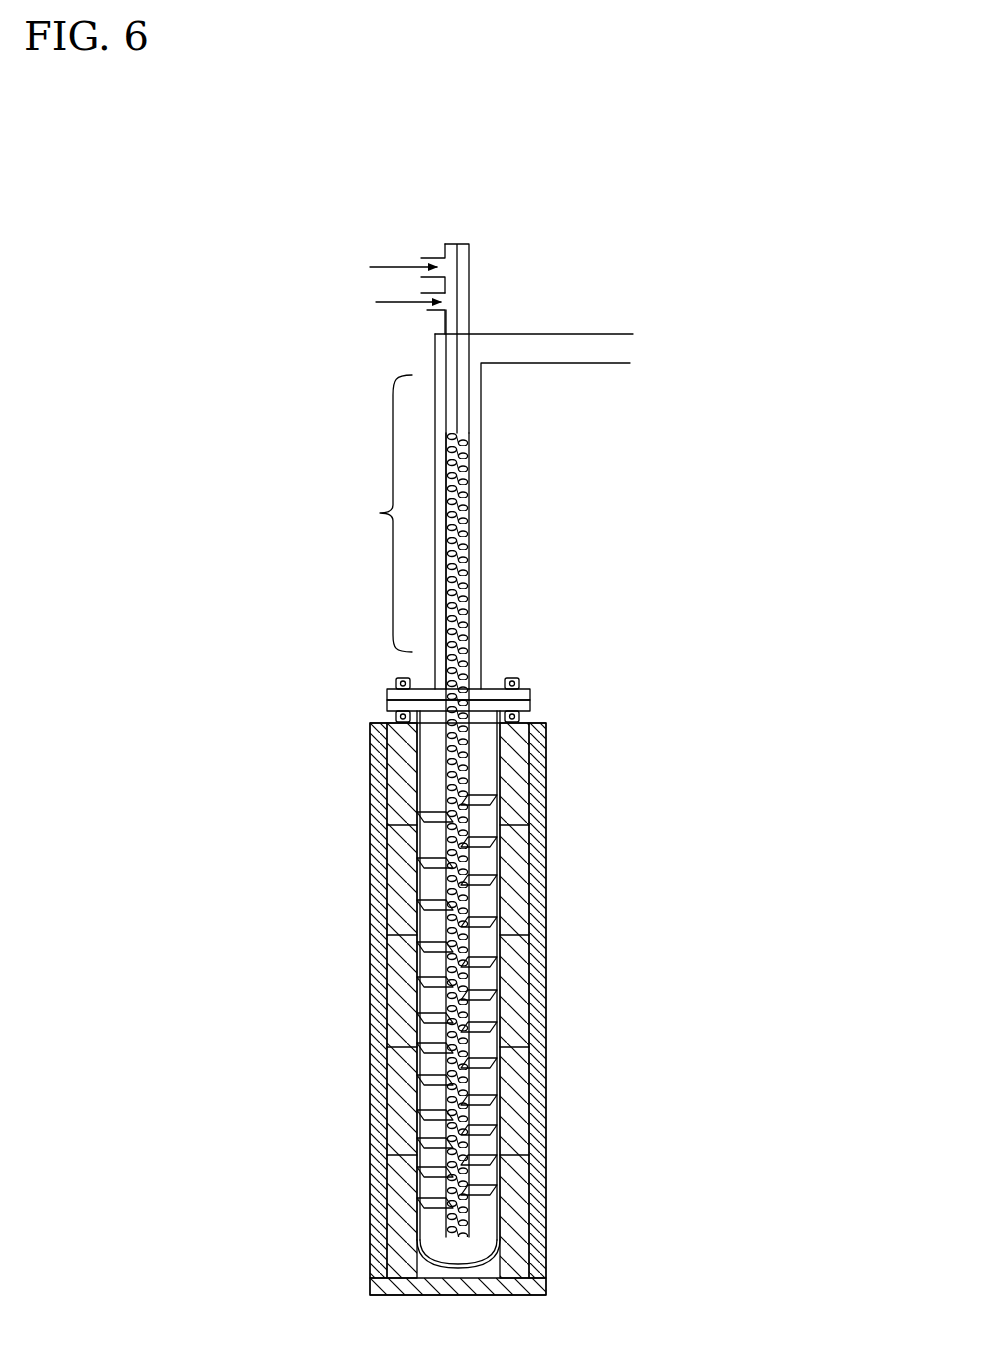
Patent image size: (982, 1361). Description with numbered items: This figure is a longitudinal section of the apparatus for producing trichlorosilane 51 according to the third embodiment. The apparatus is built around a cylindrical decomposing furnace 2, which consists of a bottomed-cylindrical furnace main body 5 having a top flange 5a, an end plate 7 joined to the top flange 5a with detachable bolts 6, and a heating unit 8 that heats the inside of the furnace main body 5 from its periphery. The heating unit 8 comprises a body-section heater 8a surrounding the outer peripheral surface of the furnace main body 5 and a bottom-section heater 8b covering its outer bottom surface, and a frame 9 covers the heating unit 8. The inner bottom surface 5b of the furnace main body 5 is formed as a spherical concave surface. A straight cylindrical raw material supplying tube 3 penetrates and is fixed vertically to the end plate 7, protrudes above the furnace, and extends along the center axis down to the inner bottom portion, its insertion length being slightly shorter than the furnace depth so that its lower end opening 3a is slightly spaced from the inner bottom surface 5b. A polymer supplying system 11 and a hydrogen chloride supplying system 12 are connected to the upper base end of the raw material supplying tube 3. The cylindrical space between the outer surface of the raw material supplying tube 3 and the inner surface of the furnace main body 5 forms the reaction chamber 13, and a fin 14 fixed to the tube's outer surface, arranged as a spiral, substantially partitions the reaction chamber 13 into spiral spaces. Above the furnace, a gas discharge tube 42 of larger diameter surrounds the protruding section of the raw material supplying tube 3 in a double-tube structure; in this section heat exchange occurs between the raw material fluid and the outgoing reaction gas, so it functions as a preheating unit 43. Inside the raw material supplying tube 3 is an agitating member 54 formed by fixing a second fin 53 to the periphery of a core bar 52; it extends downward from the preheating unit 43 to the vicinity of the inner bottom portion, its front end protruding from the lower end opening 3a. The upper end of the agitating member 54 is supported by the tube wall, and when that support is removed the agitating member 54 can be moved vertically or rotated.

The decomposing furnace 2 is at (555, 887).
The raw material supplying tube 3 is at (472, 757).
The lower end opening 3a is at (468, 1223).
The furnace main body 5 is at (500, 1003).
The top flange 5a is at (387, 705).
The inner bottom surface 5b is at (457, 1265).
The bolts 6 is at (509, 681).
The end plate 7 is at (392, 683).
The heating unit 8 is at (382, 1122).
The body-section heater 8a is at (397, 973).
The bottom-section heater 8b is at (425, 1262).
The frame 9 is at (378, 893).
The polymer supplying system 11 is at (392, 303).
The hydrogen chloride supplying system 12 is at (385, 265).
The reaction chamber 13 is at (430, 1025).
The fin 14 is at (478, 1130).
The gas discharge tube 42 is at (563, 333).
The preheating unit 43 is at (371, 513).
The apparatus for producing trichlorosilane 51 is at (593, 678).
The core bar 52 is at (460, 418).
The second fin 53 is at (468, 557).
The agitating member 54 is at (470, 496).